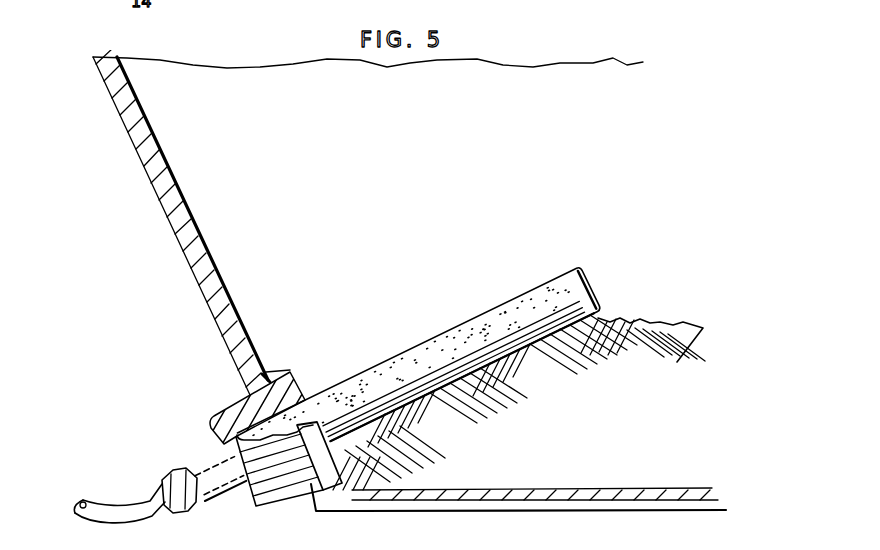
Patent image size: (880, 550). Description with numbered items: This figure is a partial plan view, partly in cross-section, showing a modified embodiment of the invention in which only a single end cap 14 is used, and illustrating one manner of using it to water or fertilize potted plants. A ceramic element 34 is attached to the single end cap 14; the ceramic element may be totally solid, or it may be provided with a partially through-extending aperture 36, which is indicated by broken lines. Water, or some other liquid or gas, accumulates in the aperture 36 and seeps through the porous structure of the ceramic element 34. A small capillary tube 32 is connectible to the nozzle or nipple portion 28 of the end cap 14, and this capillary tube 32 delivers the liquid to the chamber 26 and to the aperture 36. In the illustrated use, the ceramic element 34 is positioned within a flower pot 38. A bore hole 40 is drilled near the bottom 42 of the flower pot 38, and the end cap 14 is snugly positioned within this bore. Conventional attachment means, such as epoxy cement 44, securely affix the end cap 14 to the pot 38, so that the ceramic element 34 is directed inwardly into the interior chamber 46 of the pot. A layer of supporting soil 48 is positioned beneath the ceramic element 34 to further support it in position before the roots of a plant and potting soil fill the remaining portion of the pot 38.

The end cap 14 is at (298, 388).
The chamber 26 is at (222, 434).
The nozzle or nipple portion 28 is at (188, 470).
The capillary tube 32 is at (103, 512).
The ceramic element 34 is at (478, 312).
The aperture 36 is at (415, 357).
The flower pot 38 is at (175, 175).
The bore hole 40 is at (310, 498).
The bottom 42 is at (500, 500).
The epoxy cement 44 is at (268, 368).
The interior chamber 46 is at (413, 181).
The supporting soil 48 is at (628, 338).